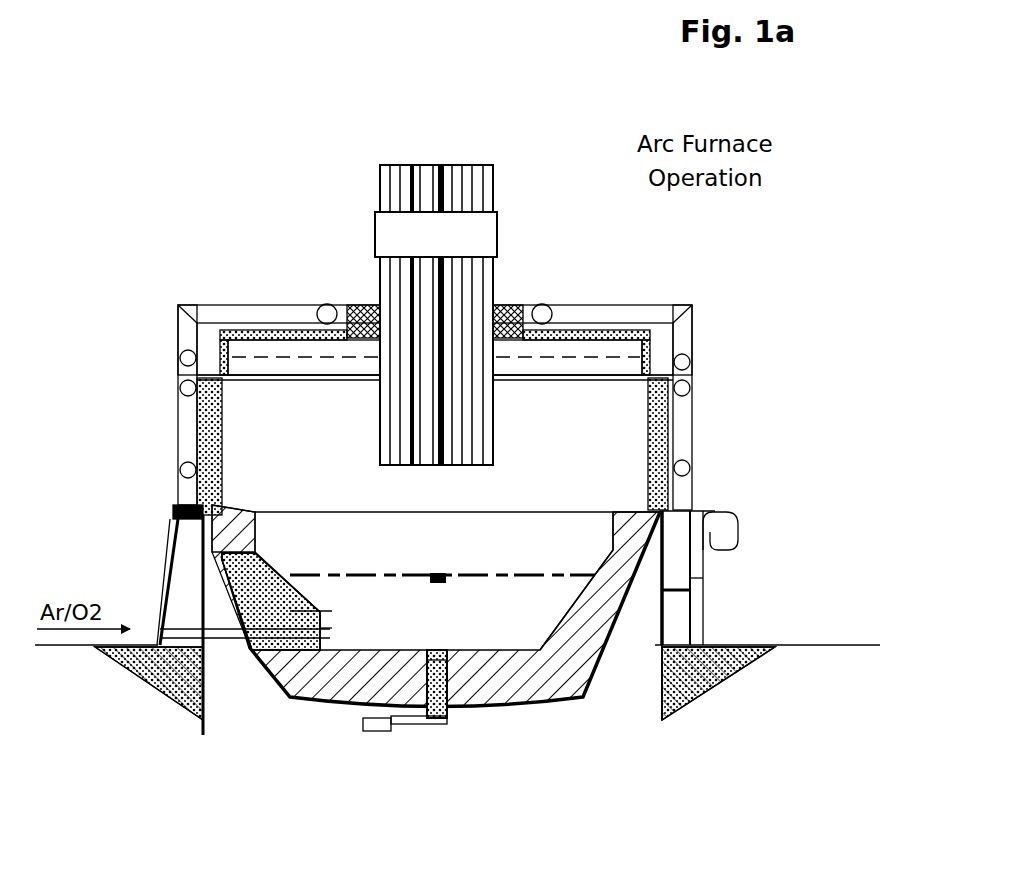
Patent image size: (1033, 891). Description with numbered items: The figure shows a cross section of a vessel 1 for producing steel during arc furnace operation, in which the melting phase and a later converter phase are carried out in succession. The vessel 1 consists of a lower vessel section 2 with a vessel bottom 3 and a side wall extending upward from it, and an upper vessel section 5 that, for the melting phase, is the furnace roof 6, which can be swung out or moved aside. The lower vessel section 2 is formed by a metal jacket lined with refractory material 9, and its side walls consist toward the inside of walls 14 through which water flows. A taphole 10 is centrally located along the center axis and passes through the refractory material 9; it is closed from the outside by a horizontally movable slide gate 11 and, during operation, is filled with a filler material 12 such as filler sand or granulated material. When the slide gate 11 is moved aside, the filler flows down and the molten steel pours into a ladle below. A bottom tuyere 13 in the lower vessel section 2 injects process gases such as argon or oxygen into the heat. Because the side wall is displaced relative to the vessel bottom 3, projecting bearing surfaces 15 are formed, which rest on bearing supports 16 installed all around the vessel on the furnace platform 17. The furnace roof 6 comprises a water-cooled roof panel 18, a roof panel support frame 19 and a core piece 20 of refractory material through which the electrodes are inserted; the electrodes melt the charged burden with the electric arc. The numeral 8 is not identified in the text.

The vessel 1 is at (765, 318).
The lower vessel section 2 is at (600, 688).
The vessel bottom 3 is at (515, 685).
The upper vessel section 5 is at (700, 320).
The furnace roof 6 is at (636, 318).
The vessel side wall 8 is at (612, 660).
The refractory material 9 is at (640, 535).
The taphole 10 is at (447, 705).
The slide gate 11 is at (420, 724).
The filler material 12 is at (437, 655).
The bottom tuyere 13 is at (265, 660).
The walls through which water flows 14 is at (668, 425).
The projecting bearing surfaces 15 is at (175, 515).
The bearing supports 16 is at (175, 580).
The furnace platform 17 is at (760, 645).
The water-cooled roof panel 18 is at (595, 328).
The roof panel support frame 19 is at (558, 310).
The core piece 20 is at (508, 305).